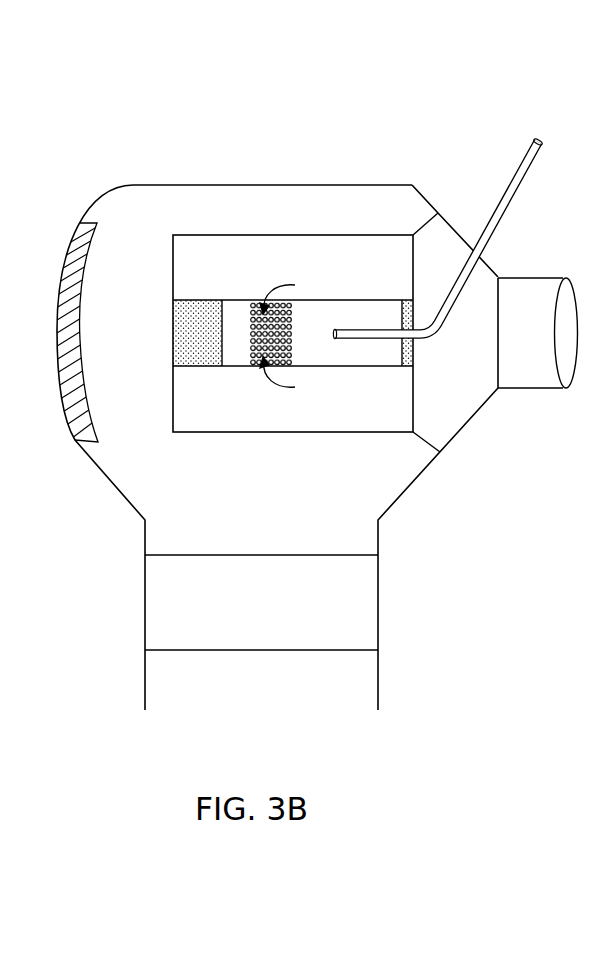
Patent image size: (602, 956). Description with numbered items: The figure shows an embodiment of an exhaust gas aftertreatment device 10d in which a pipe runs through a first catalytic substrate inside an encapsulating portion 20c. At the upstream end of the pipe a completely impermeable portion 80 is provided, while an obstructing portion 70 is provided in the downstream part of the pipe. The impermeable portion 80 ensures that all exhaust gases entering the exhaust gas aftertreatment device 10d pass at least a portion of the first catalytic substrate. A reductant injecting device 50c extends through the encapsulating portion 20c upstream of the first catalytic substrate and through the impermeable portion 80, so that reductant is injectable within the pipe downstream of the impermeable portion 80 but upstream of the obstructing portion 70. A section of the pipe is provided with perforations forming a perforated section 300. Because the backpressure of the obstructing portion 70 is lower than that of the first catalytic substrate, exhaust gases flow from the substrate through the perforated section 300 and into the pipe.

The exhaust gas aftertreatment device 10d is at (437, 173).
The encapsulating portion 20c is at (324, 185).
The reductant injecting device 50c is at (462, 290).
The obstructing portion 70 is at (195, 347).
The impermeable portion 80 is at (413, 348).
The perforated section 300 is at (252, 334).